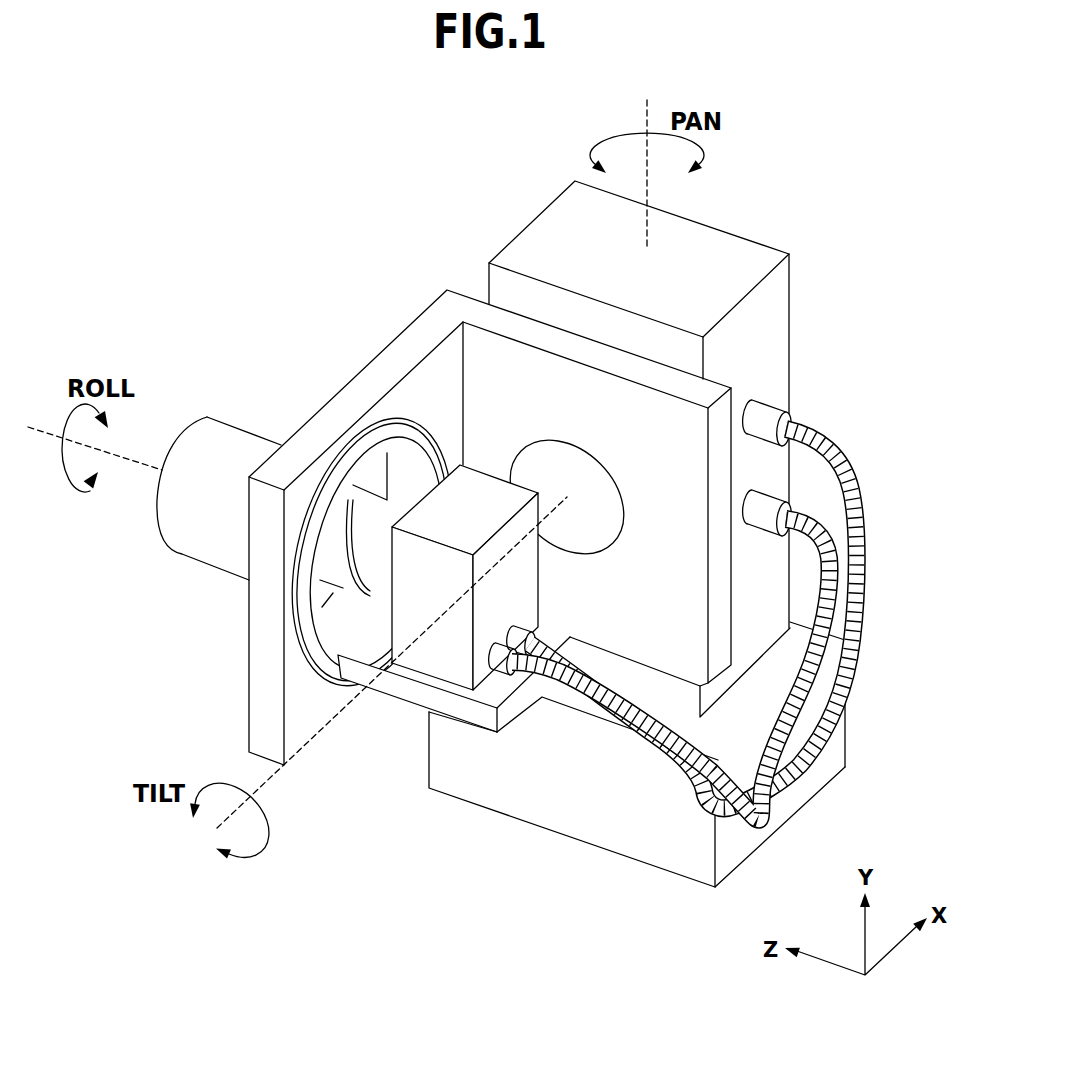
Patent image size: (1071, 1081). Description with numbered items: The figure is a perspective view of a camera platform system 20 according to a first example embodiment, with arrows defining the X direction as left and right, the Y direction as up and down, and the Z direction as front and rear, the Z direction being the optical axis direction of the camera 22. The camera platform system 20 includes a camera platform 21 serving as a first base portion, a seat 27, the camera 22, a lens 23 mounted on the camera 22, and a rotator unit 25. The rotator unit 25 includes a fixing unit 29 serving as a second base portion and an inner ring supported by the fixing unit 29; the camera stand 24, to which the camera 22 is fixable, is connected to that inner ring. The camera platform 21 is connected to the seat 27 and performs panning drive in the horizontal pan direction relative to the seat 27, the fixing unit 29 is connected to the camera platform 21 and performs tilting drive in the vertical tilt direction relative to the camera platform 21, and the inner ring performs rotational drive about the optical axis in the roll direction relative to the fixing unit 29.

The camera platform system 20 is at (385, 232).
The camera platform 21 is at (711, 251).
The camera 22 is at (484, 678).
The lens 23 is at (235, 443).
The camera stand 24 is at (397, 690).
The rotator unit 25 is at (313, 635).
The seat 27 is at (600, 822).
The fixing unit 29 is at (370, 378).